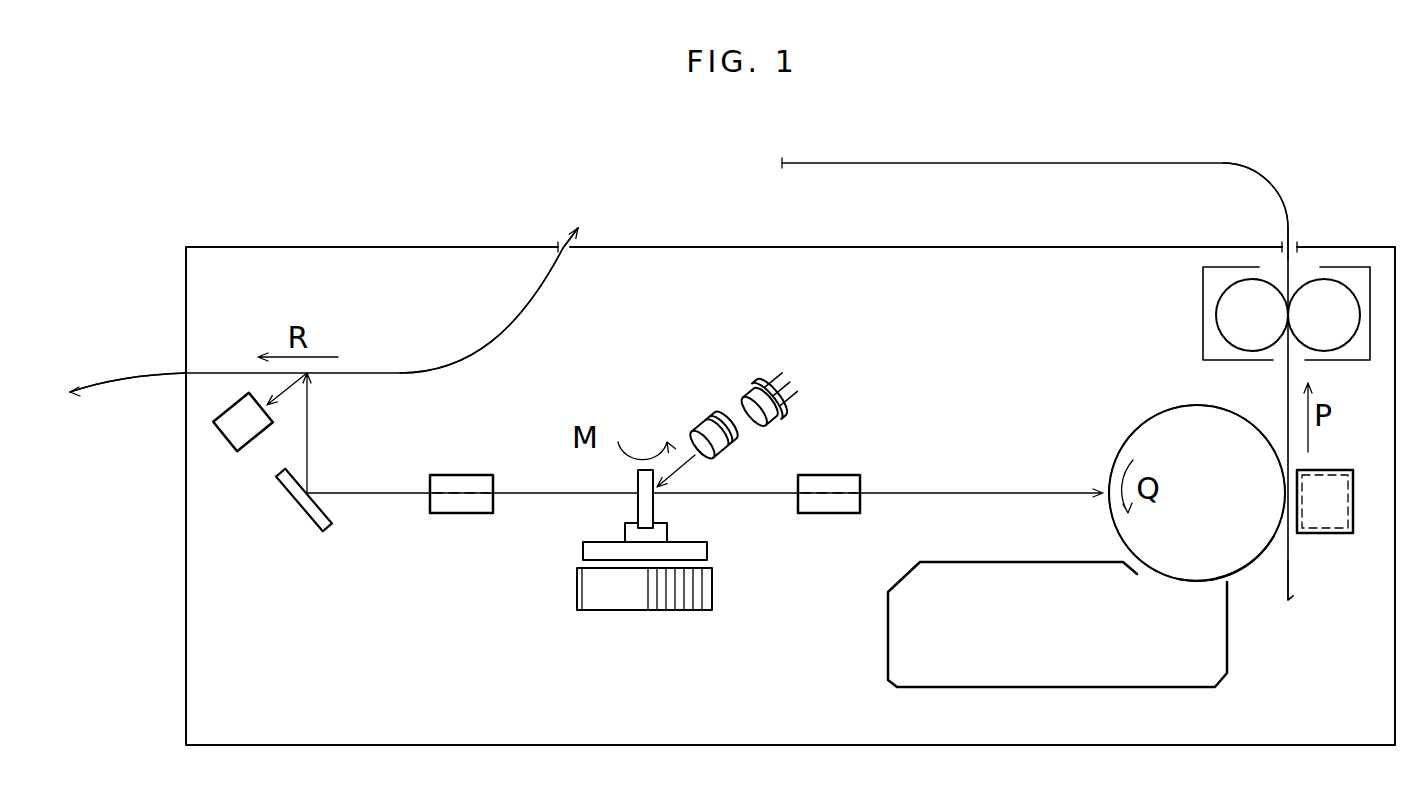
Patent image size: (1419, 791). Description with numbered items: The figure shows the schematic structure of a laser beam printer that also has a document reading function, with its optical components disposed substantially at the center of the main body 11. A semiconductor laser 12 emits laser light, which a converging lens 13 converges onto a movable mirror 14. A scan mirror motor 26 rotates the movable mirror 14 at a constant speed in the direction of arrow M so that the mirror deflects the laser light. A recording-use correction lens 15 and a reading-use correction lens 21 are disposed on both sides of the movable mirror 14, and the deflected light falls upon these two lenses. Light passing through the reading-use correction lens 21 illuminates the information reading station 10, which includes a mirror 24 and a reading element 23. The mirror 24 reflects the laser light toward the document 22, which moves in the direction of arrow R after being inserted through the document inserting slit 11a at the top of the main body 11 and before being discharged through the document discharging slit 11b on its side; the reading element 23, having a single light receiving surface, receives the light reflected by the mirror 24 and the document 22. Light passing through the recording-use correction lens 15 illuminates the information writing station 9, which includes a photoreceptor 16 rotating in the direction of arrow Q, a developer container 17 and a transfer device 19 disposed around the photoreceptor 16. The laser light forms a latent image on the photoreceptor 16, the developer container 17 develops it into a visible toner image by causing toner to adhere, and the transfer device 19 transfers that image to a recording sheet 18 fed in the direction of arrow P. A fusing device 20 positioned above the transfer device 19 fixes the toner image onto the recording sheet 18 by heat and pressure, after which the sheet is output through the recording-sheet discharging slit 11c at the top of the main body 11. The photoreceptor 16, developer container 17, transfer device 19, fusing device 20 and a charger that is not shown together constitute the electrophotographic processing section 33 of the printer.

The information writing station 9 is at (1085, 418).
The information reading station 10 is at (370, 447).
The main body 11 is at (695, 247).
The document inserting slit 11a is at (577, 240).
The document discharging slit 11b is at (180, 382).
The recording-sheet discharging slit 11c is at (1297, 247).
The semiconductor laser 12 is at (788, 410).
The converging lens 13 is at (715, 420).
The movable mirror 14 is at (657, 510).
The recording-use correction lens 15 is at (862, 473).
The photoreceptor 16 is at (1135, 431).
The developer container 17 is at (1213, 663).
The recording sheet 18 is at (1263, 180).
The transfer device 19 is at (1332, 533).
The fusing device 20 is at (1362, 363).
The reading-use correction lens 21 is at (460, 515).
The document 22 is at (522, 312).
The reading element 23 is at (220, 435).
The mirror 24 is at (297, 510).
The scan mirror motor 26 is at (712, 594).
The electrophotographic processing section 33 is at (1290, 613).